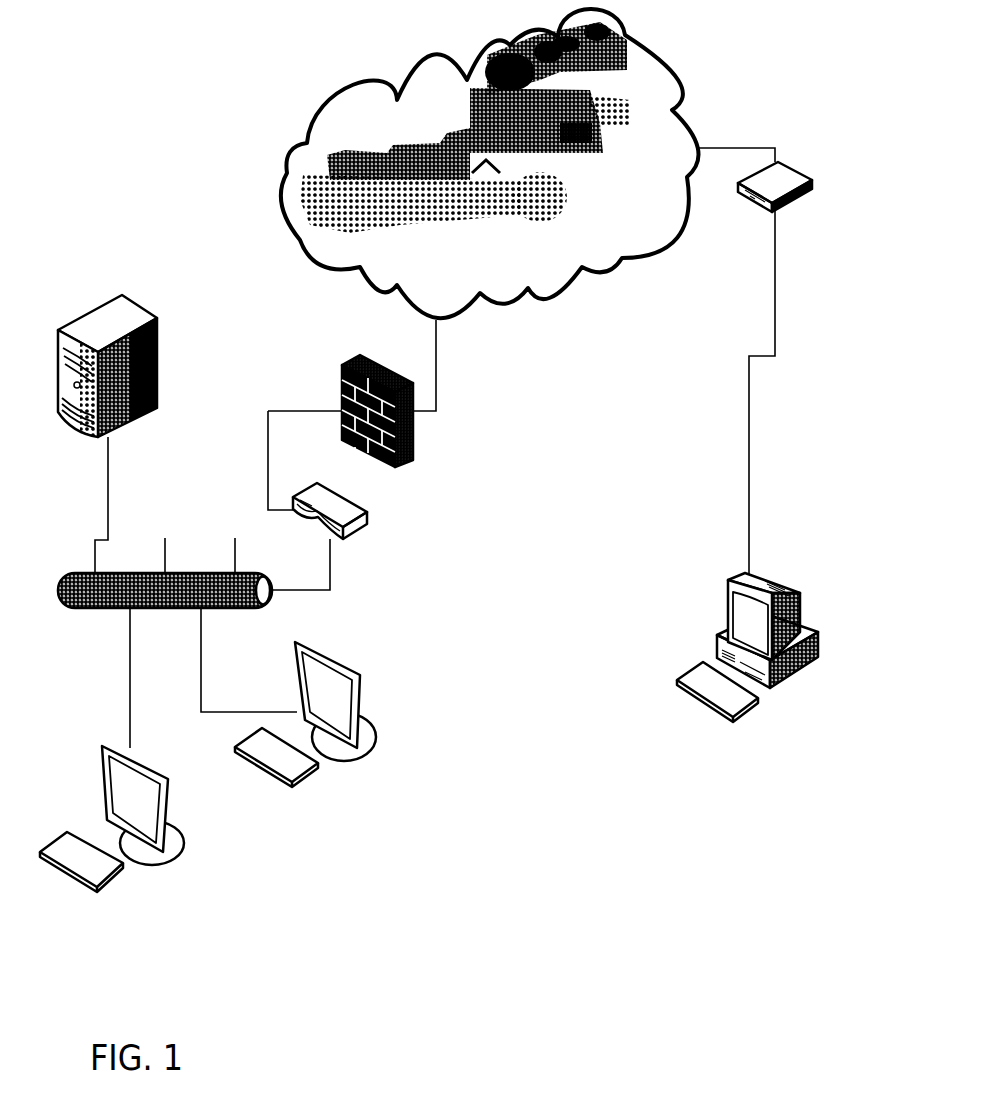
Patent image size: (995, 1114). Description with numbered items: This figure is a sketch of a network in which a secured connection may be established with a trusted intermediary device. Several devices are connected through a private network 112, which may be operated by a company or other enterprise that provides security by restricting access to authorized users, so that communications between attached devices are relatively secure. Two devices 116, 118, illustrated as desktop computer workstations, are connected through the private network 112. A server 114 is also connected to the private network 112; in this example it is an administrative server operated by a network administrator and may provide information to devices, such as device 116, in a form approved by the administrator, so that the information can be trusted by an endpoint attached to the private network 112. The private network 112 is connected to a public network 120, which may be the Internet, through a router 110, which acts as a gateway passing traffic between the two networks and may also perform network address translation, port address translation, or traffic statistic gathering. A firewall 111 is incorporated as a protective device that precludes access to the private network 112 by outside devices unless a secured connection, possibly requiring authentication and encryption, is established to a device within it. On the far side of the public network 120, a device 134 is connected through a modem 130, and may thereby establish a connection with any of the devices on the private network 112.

The router 110 is at (367, 520).
The firewall 111 is at (412, 440).
The private network 112 is at (62, 607).
The server 114 is at (150, 318).
The device 116 is at (362, 692).
The device 118 is at (162, 865).
The public network 120 is at (623, 268).
The modem 130 is at (797, 165).
The device 134 is at (793, 588).